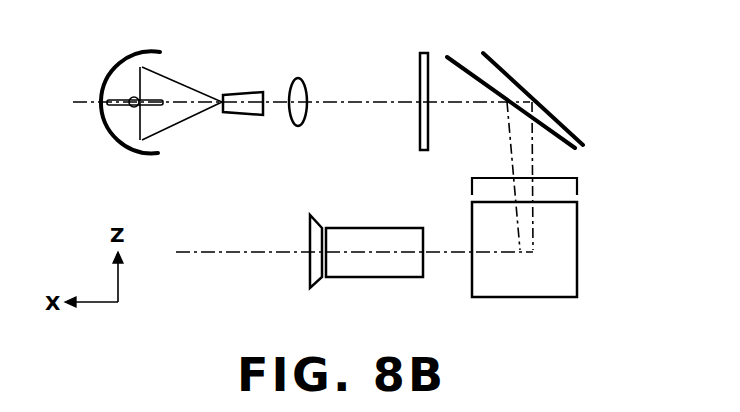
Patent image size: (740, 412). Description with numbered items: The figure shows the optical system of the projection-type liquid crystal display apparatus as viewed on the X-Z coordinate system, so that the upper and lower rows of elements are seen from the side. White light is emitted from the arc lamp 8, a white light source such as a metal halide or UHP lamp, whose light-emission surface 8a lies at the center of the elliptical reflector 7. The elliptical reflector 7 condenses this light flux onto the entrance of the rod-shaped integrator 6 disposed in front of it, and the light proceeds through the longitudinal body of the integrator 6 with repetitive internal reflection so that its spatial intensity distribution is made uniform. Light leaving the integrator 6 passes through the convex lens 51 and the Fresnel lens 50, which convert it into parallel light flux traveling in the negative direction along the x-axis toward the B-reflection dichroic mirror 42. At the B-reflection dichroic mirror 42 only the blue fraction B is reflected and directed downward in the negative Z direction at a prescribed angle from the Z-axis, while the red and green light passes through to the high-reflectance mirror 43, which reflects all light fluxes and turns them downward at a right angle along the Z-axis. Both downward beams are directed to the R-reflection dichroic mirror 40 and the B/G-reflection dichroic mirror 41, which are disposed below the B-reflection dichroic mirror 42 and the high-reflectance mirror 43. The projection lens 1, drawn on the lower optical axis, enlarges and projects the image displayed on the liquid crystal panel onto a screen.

The projection lens 1 is at (365, 238).
The rod-shaped integrator 6 is at (242, 93).
The elliptical reflector 7 is at (150, 128).
The arc lamp 8 is at (110, 107).
The light-emission surface 8a is at (130, 97).
The R-light reflection dichroic mirror 40 is at (568, 187).
The B/G-light reflection dichroic mirror 41 is at (565, 238).
The B-light reflection dichroic mirror 42 is at (460, 60).
The high-reflectance mirror 43 is at (505, 67).
The Fresnel lens 50 is at (420, 58).
The convex lens 51 is at (300, 79).
The B (blue) light B is at (508, 152).